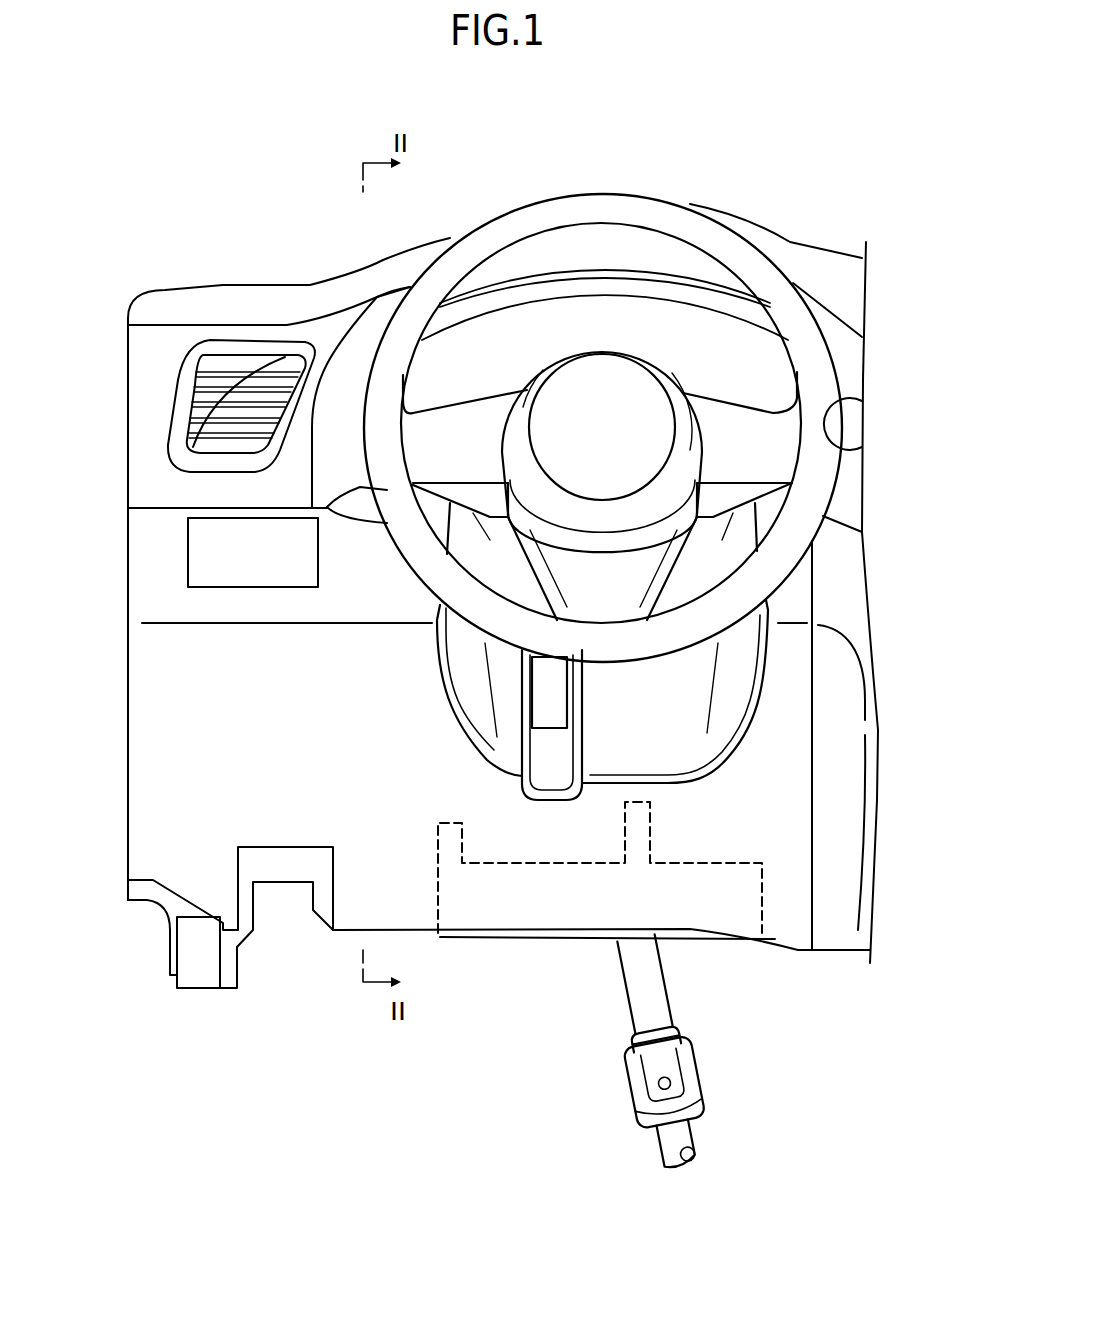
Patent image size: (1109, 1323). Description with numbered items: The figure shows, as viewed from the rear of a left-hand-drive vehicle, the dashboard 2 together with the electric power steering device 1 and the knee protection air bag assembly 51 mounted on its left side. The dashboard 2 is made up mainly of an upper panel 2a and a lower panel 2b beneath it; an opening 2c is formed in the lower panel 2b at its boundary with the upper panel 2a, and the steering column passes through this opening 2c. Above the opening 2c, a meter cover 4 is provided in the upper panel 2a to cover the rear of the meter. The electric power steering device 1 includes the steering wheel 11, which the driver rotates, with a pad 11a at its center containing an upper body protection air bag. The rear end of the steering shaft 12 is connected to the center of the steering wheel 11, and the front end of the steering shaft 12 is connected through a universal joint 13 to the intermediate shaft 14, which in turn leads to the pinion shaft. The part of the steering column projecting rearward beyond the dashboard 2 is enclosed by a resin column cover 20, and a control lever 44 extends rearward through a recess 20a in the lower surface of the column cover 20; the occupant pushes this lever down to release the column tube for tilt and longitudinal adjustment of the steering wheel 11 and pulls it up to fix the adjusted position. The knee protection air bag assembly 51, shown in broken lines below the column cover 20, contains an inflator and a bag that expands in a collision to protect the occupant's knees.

The electric power steering device 1 is at (778, 252).
The steering wheel 11 is at (495, 233).
The pad 11a is at (603, 378).
The meter cover 4 is at (844, 357).
The dashboard 2 is at (60, 395).
The upper panel 2a is at (143, 410).
The lower panel 2b is at (143, 548).
The opening 2c is at (757, 743).
The column cover 20 is at (735, 652).
The recess 20a is at (550, 747).
The control lever 44 is at (555, 692).
The knee protection air bag assembly 51 is at (489, 944).
The steering shaft 12 is at (667, 985).
The universal joint 13 is at (695, 1065).
The intermediate shaft 14 is at (695, 1132).